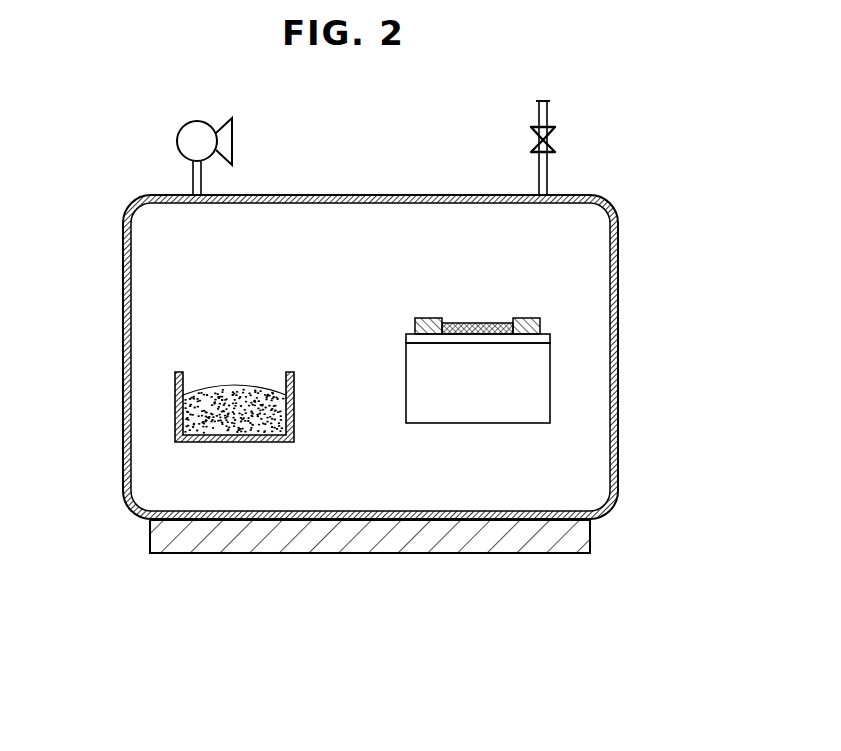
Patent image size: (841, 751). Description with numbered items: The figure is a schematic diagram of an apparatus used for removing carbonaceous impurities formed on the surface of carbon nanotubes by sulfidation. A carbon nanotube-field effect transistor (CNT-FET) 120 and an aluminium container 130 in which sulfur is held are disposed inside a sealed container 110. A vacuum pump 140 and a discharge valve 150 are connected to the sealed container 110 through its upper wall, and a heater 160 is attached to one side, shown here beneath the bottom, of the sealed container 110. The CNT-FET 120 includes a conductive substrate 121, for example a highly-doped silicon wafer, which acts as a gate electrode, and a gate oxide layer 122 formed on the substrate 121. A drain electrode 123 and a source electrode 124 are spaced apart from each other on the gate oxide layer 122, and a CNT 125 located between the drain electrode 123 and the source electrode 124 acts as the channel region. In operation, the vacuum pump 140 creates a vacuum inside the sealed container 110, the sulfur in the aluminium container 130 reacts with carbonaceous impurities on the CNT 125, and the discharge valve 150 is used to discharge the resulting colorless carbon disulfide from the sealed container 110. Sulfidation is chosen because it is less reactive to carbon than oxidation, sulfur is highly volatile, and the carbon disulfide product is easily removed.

The sealed container 110 is at (620, 338).
The carbon nanotube-field effect transistor (CNT-FET) 120 is at (516, 359).
The conductive substrate 121 is at (408, 372).
The gate oxide layer 122 is at (548, 335).
The drain electrode 123 is at (422, 317).
The source electrode 124 is at (528, 317).
The CNT 125 is at (475, 323).
The aluminium container 130 is at (176, 417).
The vacuum pump 140 is at (183, 128).
The discharge valve 150 is at (556, 151).
The heater 160 is at (418, 554).